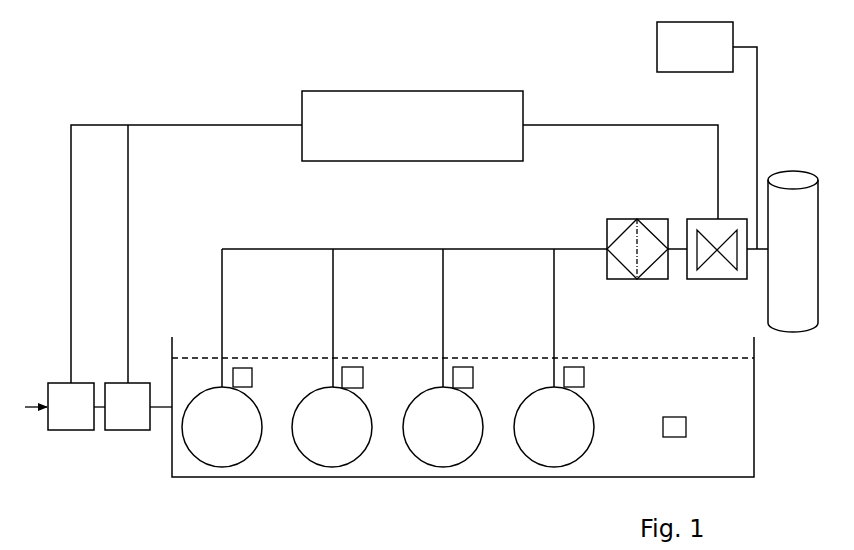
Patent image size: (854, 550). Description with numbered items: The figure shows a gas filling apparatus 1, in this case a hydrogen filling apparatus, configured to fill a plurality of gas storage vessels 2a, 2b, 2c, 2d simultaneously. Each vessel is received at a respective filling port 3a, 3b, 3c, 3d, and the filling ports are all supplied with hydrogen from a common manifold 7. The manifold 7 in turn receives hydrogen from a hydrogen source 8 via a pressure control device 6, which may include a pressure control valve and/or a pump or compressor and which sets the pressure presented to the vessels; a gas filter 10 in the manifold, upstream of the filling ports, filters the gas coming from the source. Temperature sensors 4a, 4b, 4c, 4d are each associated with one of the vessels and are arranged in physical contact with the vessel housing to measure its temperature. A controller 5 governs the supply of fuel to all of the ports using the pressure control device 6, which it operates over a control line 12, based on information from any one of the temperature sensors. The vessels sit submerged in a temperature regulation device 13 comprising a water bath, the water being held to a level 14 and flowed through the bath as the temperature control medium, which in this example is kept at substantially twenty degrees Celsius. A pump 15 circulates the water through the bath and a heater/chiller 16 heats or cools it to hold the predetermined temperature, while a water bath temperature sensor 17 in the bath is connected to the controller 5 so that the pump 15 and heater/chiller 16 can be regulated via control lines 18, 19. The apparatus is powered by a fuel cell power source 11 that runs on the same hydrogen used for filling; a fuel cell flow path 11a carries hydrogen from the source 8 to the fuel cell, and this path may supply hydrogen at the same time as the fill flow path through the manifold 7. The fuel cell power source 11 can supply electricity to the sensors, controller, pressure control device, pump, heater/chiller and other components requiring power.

The gas filling apparatus 1 is at (74, 66).
The gas storage vessel 2a is at (222, 427).
The gas storage vessel 2b is at (332, 427).
The gas storage vessel 2c is at (443, 427).
The gas storage vessel 2d is at (554, 427).
The filling port 3a is at (219, 380).
The filling port 3b is at (330, 380).
The filling port 3c is at (440, 380).
The filling port 3d is at (551, 380).
The temperature sensor 4a is at (238, 368).
The temperature sensor 4b is at (350, 368).
The temperature sensor 4c is at (460, 368).
The temperature sensor 4d is at (571, 368).
The controller 5 is at (412, 126).
The pressure control device 6 is at (707, 219).
The common manifold 7 is at (247, 248).
The hydrogen source 8 is at (793, 251).
The gas filter 10 is at (645, 219).
The fuel cell power source 11 is at (695, 47).
The fuel cell flow path 11a is at (755, 90).
The control line 12 is at (599, 124).
The temperature regulation device 13 is at (322, 491).
The water level 14 is at (678, 358).
The pump 15 is at (59, 406).
The heater/chiller 16 is at (133, 406).
The water bath temperature sensor 17 is at (675, 428).
The control line 18 is at (70, 153).
The control line 19 is at (129, 152).